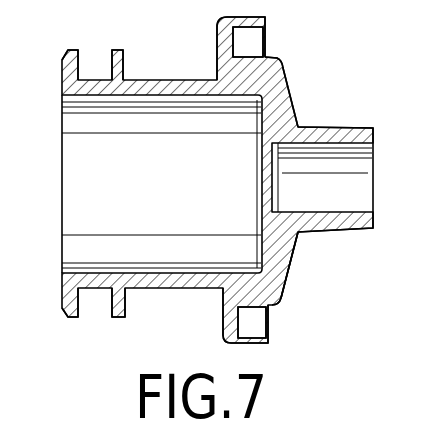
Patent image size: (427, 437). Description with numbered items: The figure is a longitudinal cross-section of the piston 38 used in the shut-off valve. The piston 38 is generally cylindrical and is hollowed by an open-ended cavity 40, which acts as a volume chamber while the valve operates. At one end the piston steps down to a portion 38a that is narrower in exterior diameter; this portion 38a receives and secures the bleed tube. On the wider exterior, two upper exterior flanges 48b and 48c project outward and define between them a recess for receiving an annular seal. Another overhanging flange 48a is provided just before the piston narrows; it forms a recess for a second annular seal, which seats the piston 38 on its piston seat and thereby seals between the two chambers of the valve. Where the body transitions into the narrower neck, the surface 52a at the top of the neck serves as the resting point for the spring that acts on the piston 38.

The piston 38 is at (285, 97).
The narrower portion 38a is at (355, 128).
The open-ended cavity 40 is at (170, 196).
The overhanging flange 48a is at (264, 325).
The upper exterior flange 48b is at (105, 306).
The upper exterior flange 48c is at (65, 312).
The top of the neck 52a is at (298, 233).